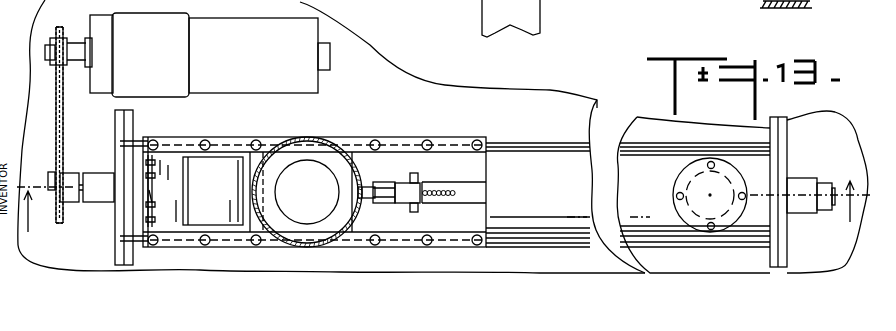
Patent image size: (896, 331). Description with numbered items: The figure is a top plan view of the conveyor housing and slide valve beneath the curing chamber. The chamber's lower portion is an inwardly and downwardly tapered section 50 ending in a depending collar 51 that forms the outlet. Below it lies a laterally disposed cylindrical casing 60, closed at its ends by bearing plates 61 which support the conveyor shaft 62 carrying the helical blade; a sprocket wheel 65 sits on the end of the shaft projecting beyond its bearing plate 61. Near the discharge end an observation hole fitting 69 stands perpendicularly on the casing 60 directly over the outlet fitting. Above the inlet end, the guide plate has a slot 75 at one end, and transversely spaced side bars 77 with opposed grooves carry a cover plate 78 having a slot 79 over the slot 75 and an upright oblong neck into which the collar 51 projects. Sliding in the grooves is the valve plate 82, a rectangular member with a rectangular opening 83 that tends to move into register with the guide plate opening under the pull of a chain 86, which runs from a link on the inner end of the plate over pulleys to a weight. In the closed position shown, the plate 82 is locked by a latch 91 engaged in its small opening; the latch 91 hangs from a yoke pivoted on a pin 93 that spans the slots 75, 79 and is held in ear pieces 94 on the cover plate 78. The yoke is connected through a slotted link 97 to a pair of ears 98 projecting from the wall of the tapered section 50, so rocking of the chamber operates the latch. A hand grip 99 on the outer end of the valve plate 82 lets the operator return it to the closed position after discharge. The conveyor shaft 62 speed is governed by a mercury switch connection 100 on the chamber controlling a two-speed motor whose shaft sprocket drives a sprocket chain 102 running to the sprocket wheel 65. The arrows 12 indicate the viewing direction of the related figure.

The direction of travel arrow 12 is at (449, 206).
The tapered section 50 is at (303, 137).
The collar 51 is at (331, 172).
The cylindrical casing 60 is at (628, 148).
The bearing plates 61 is at (122, 147).
The conveyor shaft 62 is at (50, 183).
The sprocket wheel 65 is at (58, 168).
The observation hole fitting 69 is at (690, 183).
The slot 75 is at (473, 185).
The side bars 77 is at (240, 137).
The cover plate 78 is at (360, 137).
The slot 79 is at (440, 188).
The valve plate 82 is at (178, 213).
The rectangular opening 83 is at (186, 187).
The chain 86 is at (450, 197).
The latch 91 is at (46, 51).
The pin 93 is at (408, 203).
The ear pieces 94 is at (412, 181).
The link 97 is at (414, 178).
The ears 98 is at (368, 177).
The hand grip 99 is at (157, 198).
The mercury switch connection 100 is at (158, 18).
The sprocket chain 102 is at (63, 105).